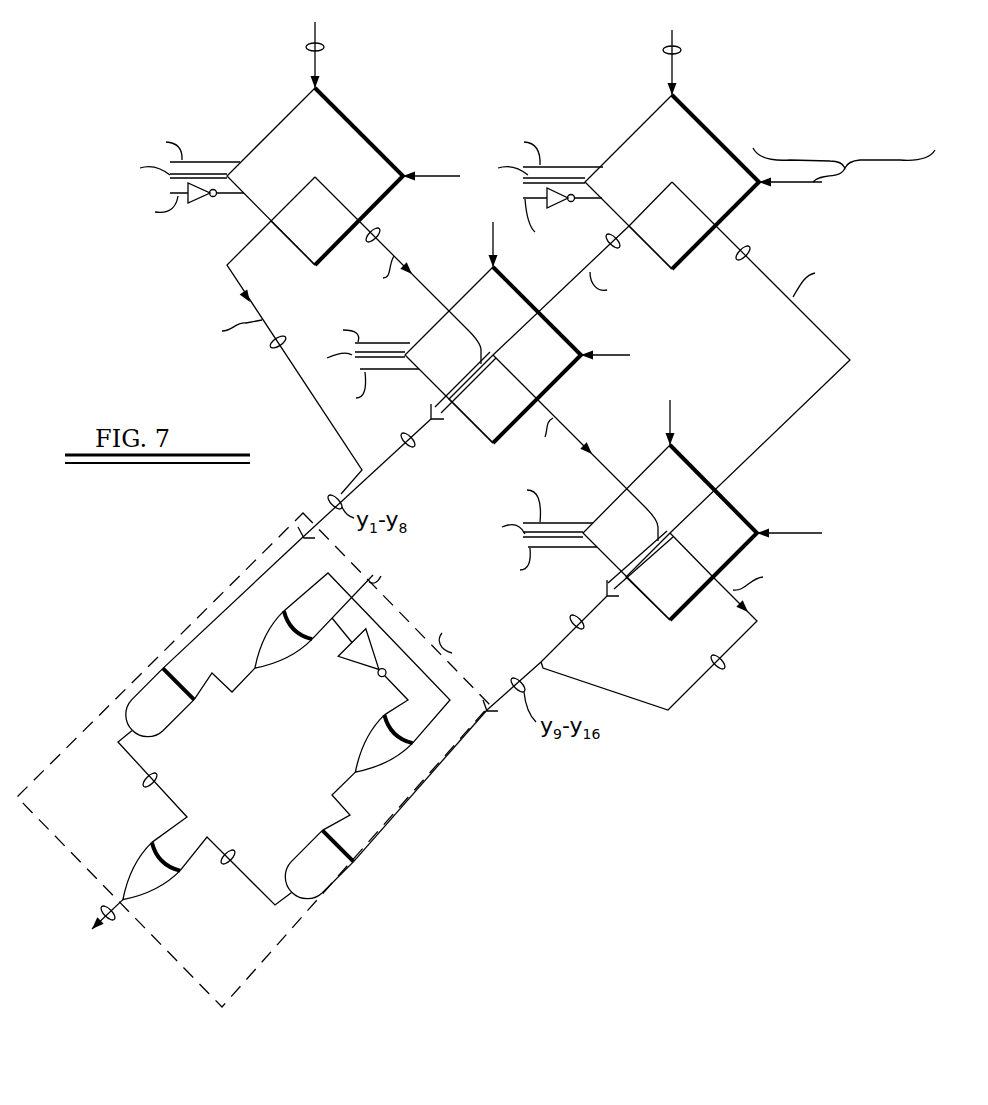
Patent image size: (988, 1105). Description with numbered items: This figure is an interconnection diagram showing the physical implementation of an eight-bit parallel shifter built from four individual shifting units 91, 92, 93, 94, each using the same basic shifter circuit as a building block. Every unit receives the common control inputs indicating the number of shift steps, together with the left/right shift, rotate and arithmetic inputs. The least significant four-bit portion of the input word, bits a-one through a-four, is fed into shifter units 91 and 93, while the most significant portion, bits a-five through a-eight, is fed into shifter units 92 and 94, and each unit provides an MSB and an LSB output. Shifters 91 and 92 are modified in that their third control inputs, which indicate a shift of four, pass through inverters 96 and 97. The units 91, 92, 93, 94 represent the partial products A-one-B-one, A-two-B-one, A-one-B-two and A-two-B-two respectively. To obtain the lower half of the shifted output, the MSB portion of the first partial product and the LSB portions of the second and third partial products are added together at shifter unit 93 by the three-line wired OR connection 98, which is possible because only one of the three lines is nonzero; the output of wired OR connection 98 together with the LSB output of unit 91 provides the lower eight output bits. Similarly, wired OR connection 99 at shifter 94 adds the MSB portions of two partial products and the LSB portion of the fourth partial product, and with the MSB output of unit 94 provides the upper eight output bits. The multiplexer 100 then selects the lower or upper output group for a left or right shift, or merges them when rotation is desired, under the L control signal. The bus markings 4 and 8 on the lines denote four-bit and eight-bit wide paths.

The shifter unit 91 is at (352, 122).
The shifter unit 92 is at (645, 120).
The shifter unit 93 is at (565, 338).
The shifter unit 94 is at (738, 510).
The inverter 96 is at (200, 203).
The inverter 97 is at (562, 206).
The wired OR connection 98 is at (432, 420).
The wired OR connection 99 is at (609, 597).
The multiplexer 100 is at (417, 815).
The 4-bit bus 4 is at (322, 47).
The 8-bit bus 8 is at (332, 498).